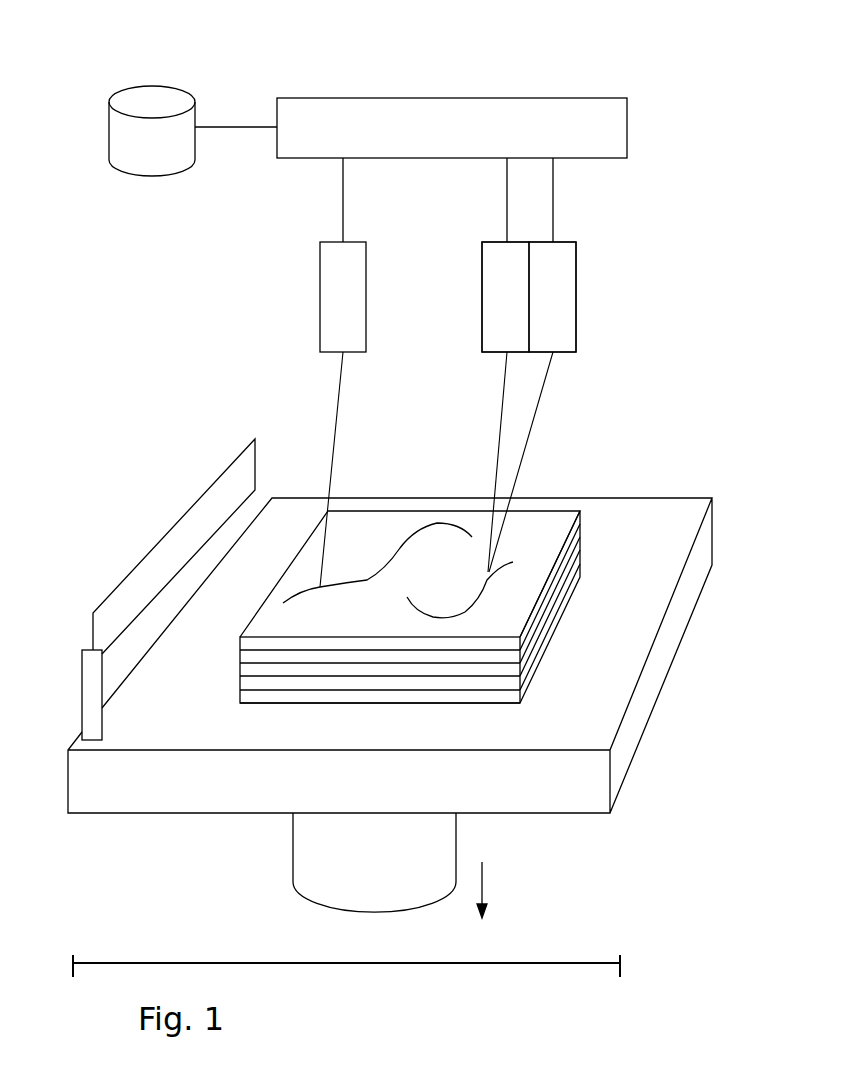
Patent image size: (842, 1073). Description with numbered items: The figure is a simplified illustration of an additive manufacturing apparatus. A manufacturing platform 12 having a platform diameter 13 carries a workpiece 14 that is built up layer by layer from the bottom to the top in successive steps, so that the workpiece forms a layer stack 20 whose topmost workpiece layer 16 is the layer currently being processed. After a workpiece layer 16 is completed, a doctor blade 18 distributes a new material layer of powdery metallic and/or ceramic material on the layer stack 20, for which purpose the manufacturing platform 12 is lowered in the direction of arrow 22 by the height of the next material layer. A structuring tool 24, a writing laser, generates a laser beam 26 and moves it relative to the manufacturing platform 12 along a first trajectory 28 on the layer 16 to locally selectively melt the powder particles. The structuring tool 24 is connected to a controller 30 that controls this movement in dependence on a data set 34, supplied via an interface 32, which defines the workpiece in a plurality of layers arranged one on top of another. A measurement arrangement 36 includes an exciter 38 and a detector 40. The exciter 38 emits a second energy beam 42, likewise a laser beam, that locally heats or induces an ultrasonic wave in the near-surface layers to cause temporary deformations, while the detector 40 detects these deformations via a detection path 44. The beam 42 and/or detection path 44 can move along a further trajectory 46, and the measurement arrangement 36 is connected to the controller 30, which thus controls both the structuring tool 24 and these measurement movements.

The manufacturing platform 12 is at (655, 678).
The platform diameter 13 is at (467, 965).
The workpiece 14 is at (265, 706).
The topmost workpiece layer 16 is at (537, 520).
The doctor blade 18 is at (170, 548).
The layer stack 20 is at (493, 680).
The arrow 22 is at (483, 886).
The structuring tool 24 is at (332, 286).
The laser beam 26 is at (337, 393).
The first trajectory 28 is at (367, 573).
The controller 30 is at (388, 97).
The interface 32 is at (268, 113).
The data set 34 is at (128, 98).
The measurement arrangement 36 is at (580, 320).
The exciter 38 is at (490, 290).
The detector 40 is at (567, 288).
The second energy beam 42 is at (494, 415).
The detection path 44 is at (544, 380).
The further trajectory 46 is at (433, 617).